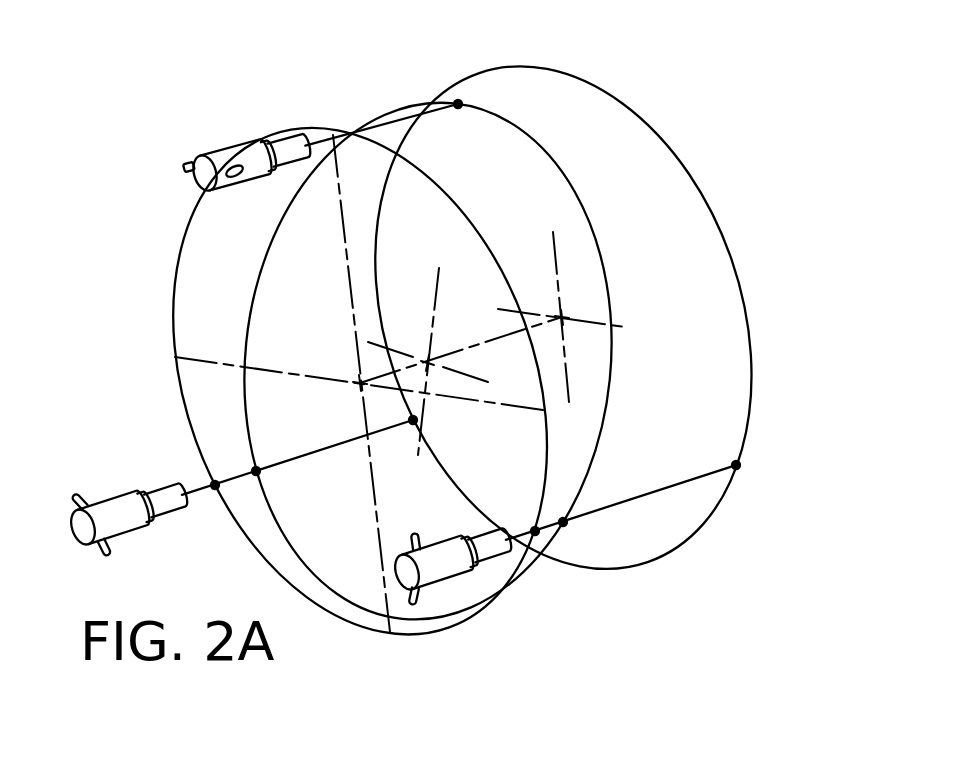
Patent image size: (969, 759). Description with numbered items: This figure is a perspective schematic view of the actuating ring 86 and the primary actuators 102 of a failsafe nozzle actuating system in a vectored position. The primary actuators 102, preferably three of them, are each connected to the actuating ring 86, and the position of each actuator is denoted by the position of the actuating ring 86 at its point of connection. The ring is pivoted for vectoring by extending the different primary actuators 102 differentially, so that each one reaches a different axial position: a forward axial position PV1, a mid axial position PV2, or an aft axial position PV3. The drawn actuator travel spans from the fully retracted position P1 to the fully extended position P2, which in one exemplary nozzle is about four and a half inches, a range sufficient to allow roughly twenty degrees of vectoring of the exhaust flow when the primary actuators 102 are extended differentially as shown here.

The actuating ring 86 is at (448, 193).
The primary actuators 102 is at (240, 153).
The forward axial position PV1 is at (458, 100).
The mid axial position PV2 is at (259, 474).
The aft axial position PV3 is at (565, 524).
The fully retracted position P1 is at (533, 529).
The fully extended position P2 is at (740, 468).